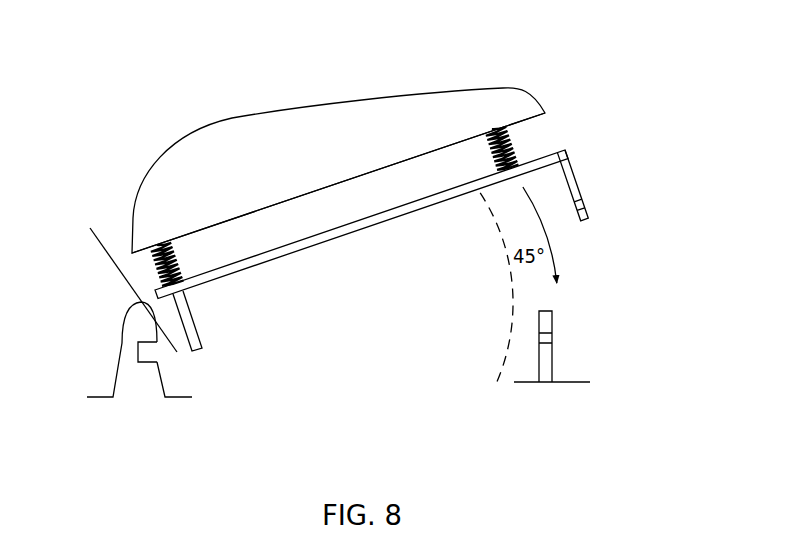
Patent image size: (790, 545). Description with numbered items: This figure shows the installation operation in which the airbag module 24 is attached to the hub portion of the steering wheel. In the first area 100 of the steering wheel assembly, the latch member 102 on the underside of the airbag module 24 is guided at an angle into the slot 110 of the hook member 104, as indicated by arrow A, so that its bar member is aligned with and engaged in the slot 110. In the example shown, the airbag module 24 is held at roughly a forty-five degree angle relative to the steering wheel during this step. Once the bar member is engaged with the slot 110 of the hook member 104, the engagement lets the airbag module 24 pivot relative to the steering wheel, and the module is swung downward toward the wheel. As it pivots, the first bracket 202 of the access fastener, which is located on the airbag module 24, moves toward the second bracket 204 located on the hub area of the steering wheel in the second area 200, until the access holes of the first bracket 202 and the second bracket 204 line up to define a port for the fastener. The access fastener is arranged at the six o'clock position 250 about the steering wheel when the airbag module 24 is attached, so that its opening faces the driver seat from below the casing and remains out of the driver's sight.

The airbag module 24 is at (393, 78).
The 6 o'clock position 250 is at (581, 56).
The first bracket 202 is at (587, 210).
The second bracket 204 is at (548, 370).
The second area 200 is at (549, 405).
The latch member 102 is at (185, 305).
The hook member 104 is at (131, 324).
The slot 110 is at (152, 359).
The first area 100 is at (197, 424).
The arrow A is at (126, 280).